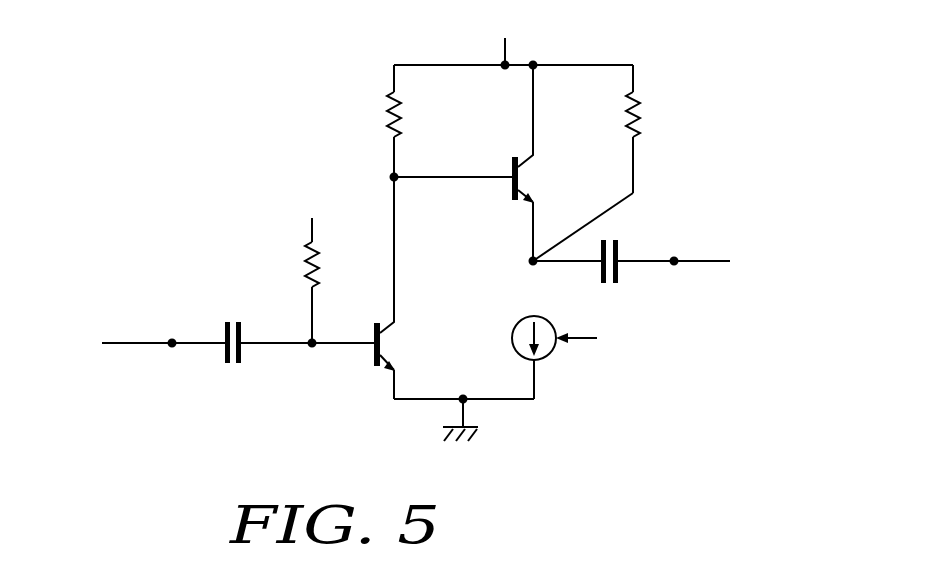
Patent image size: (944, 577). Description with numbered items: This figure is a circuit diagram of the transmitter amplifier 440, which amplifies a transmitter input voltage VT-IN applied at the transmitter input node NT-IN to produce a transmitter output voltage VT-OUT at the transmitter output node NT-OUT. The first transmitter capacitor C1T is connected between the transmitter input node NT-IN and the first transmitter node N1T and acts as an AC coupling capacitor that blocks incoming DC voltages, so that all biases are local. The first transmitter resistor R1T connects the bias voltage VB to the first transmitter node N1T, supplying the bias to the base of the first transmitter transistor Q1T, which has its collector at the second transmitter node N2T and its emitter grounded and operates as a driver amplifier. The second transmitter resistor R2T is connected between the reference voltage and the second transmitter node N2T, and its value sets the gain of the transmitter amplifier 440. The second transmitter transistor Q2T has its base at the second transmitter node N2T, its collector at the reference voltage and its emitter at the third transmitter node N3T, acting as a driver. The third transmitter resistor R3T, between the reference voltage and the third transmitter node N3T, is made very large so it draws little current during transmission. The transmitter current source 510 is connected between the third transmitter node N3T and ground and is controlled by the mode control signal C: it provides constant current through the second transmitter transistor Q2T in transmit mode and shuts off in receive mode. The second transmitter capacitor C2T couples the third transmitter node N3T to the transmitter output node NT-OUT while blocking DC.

The transmitter amplifier 440 is at (417, 247).
The transmitter current source 510 is at (513, 330).
The first transmitter resistor R1T is at (333, 280).
The second transmitter resistor R2T is at (414, 121).
The third transmitter resistor R3T is at (606, 163).
The first transmitter transistor Q1T is at (405, 288).
The second transmitter transistor Q2T is at (543, 163).
The first transmitter capacitor C1T is at (296, 361).
The second transmitter capacitor C2T is at (663, 279).
The first transmitter node N1T is at (312, 346).
The second transmitter node N2T is at (391, 177).
The third transmitter node N3T is at (531, 261).
The transmitter input node NT-IN is at (170, 342).
The transmitter output node NT-OUT is at (675, 260).
The transmitter input voltage VT-IN is at (129, 348).
The transmitter output voltage VT-OUT is at (769, 266).
The bias voltage VB is at (314, 199).
The mode control signal C is at (587, 339).